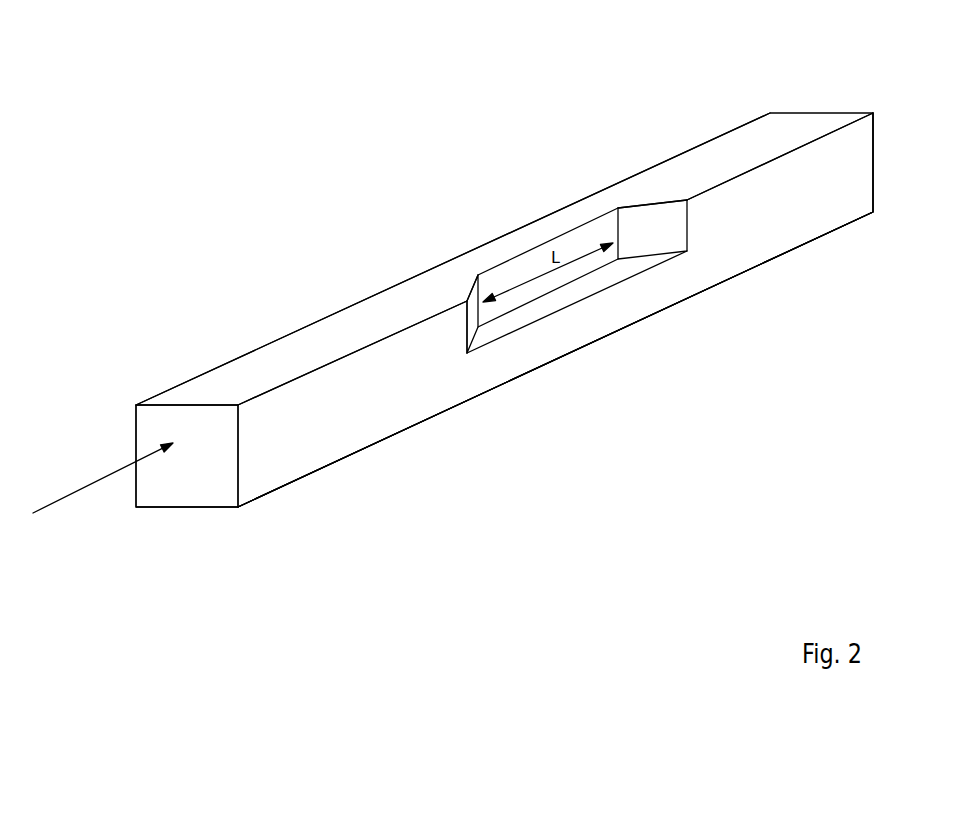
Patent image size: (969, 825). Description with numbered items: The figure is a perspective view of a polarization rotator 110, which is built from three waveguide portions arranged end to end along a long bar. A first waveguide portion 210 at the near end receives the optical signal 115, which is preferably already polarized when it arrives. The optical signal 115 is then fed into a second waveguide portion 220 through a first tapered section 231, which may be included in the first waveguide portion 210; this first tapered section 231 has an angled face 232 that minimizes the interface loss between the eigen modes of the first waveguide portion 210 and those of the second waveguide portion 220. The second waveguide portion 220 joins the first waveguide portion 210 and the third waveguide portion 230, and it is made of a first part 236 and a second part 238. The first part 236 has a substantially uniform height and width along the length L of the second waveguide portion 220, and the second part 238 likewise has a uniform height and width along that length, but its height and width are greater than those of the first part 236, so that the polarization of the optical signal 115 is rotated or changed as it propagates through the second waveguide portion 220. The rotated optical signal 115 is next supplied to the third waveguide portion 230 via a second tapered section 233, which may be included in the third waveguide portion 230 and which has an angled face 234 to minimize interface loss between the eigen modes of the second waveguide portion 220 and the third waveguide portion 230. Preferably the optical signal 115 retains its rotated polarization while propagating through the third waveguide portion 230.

The rotator 110 is at (369, 162).
The optical signal 115 is at (55, 503).
The first waveguide portion 210 is at (334, 486).
The second waveguide portion 220 is at (603, 373).
The third waveguide portion 230 is at (821, 271).
The first tapered section 231 is at (462, 329).
The angled face 232 is at (466, 302).
The second tapered section 233 is at (695, 213).
The angled face 234 is at (648, 203).
The first part 236 is at (522, 227).
The second part 238 is at (657, 313).